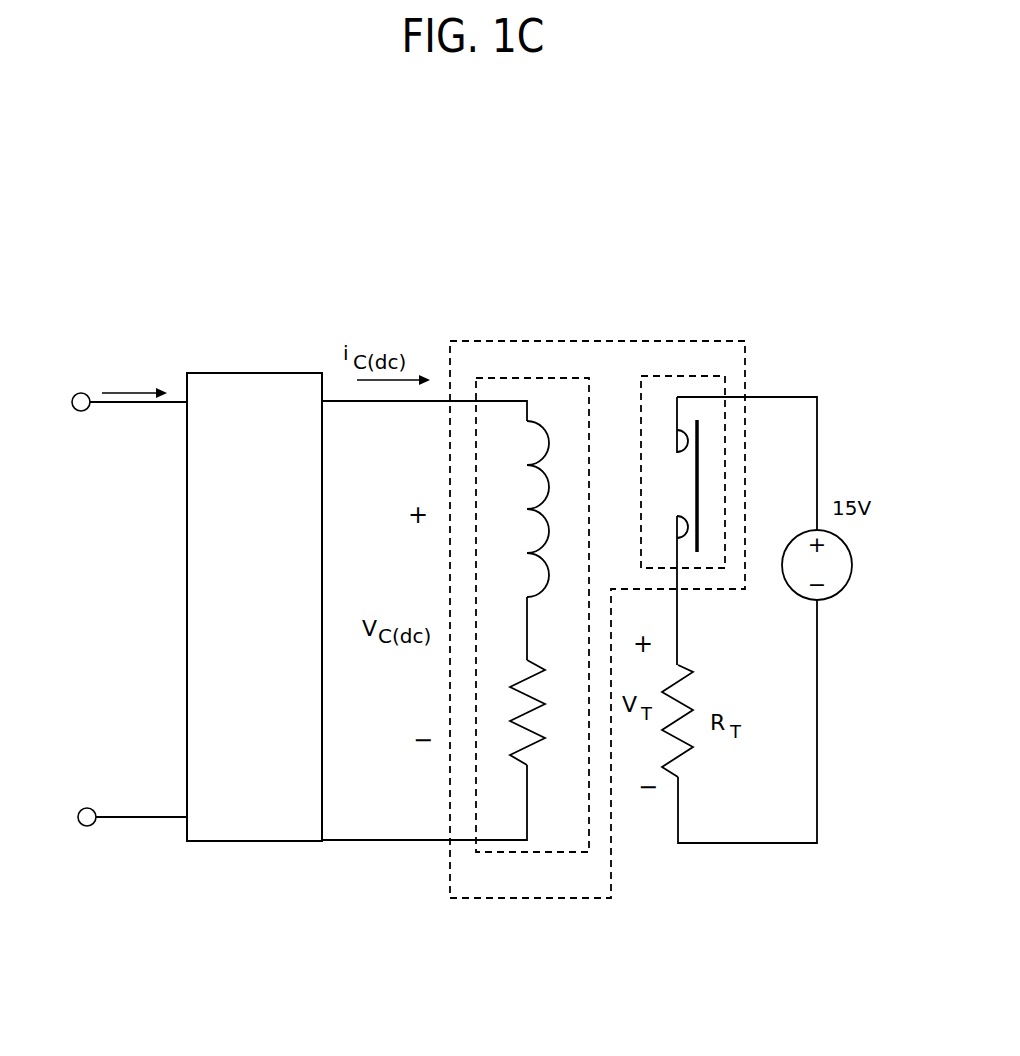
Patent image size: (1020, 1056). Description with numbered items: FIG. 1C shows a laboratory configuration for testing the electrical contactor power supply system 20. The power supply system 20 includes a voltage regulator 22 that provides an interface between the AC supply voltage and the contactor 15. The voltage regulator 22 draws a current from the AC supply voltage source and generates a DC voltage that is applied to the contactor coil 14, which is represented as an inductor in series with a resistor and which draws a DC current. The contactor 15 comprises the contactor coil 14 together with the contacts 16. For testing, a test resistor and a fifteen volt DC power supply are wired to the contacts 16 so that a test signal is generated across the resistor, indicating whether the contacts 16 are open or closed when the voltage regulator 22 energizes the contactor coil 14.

The contactor coil 14 is at (517, 373).
The contactor 15 is at (573, 338).
The contacts 16 is at (688, 373).
The electrical contactor power supply system 20 is at (224, 333).
The voltage regulator 22 is at (269, 645).